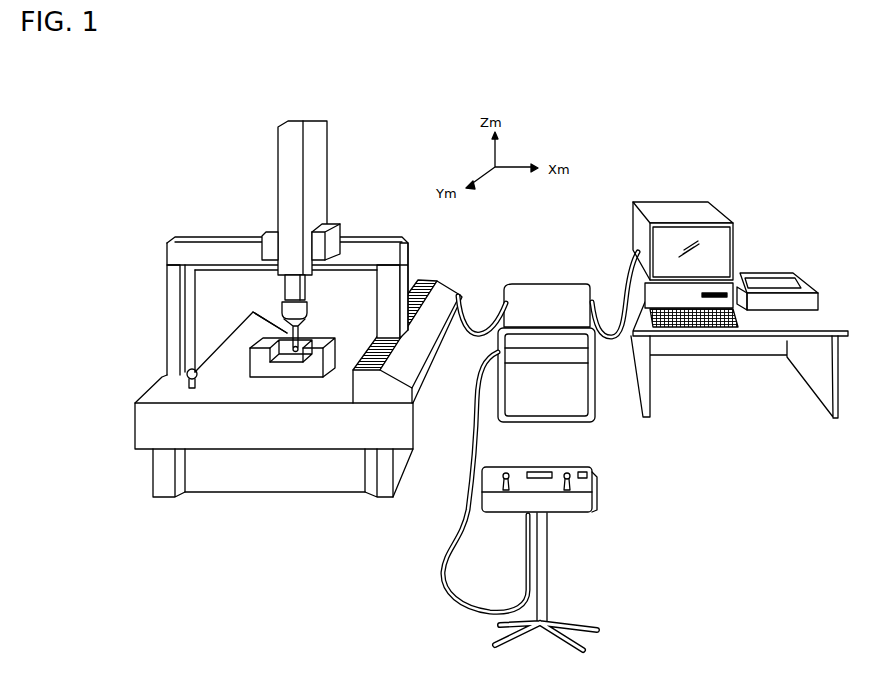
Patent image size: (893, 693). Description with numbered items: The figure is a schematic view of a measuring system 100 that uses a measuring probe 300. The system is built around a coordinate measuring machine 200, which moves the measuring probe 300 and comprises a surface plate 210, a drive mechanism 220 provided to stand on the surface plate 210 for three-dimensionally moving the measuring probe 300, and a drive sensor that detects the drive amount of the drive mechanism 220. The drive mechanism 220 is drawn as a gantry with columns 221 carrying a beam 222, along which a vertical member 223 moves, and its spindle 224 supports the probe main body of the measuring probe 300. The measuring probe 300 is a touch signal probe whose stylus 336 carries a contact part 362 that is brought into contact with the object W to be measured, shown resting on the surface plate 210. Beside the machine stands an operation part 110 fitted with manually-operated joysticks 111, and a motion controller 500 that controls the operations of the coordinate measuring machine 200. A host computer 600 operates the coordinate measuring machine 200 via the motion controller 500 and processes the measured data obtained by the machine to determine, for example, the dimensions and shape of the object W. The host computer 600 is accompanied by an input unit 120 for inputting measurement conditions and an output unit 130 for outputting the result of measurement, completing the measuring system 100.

The measuring system 100 is at (649, 166).
The operation part 110 is at (605, 527).
The joysticks 111 is at (563, 473).
The input unit 120 is at (697, 327).
The output unit 130 is at (728, 246).
The coordinate measuring machine 200 is at (136, 194).
The surface plate 210 is at (142, 425).
The drive mechanism 220 is at (236, 203).
The columns 221 is at (172, 287).
The beam 222 is at (202, 233).
The Z column / slider 223 is at (297, 187).
The spindle 224 is at (290, 292).
The measuring probe 300 is at (310, 320).
The stylus 336 is at (253, 312).
The contact part 362 is at (303, 345).
The motion controller 500 is at (549, 286).
The host computer 600 is at (796, 246).
The object to be measured W is at (243, 370).